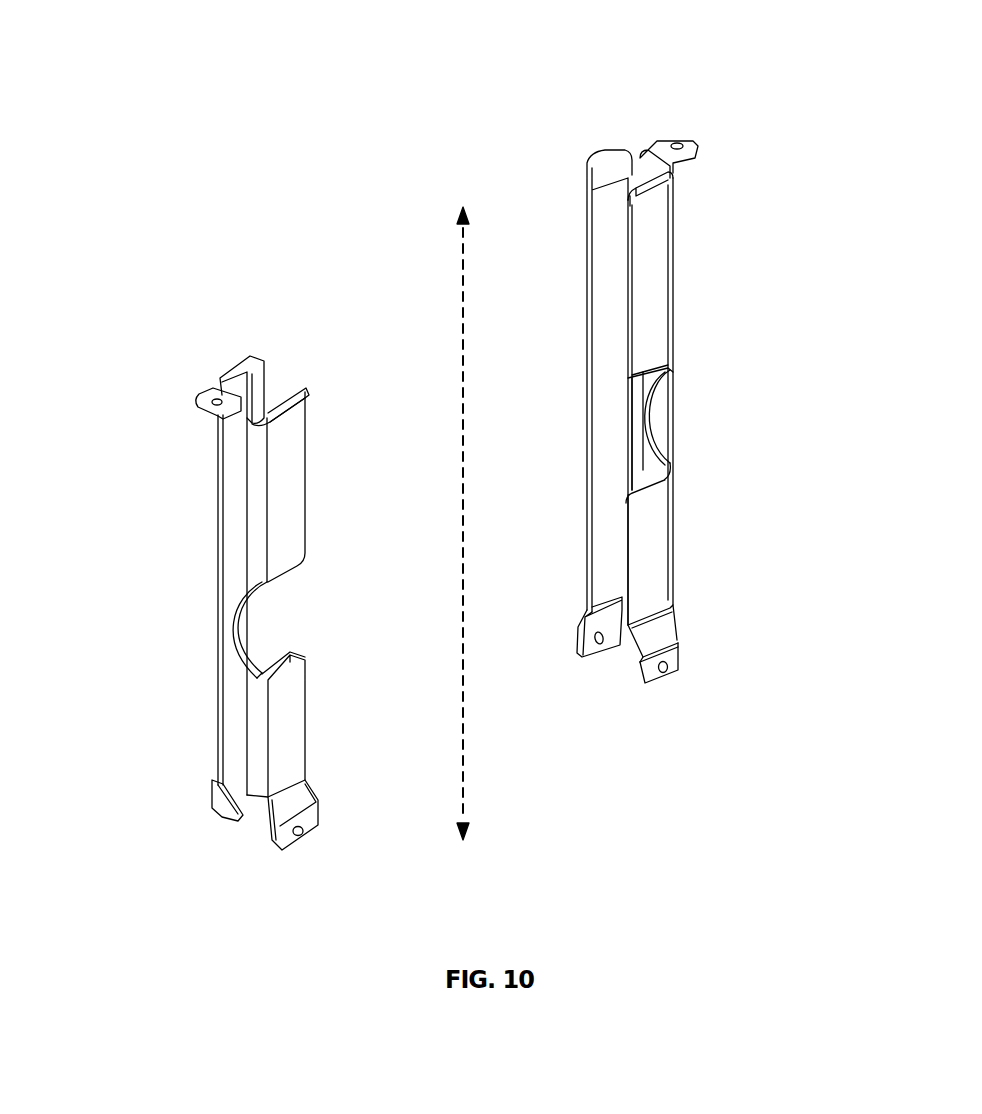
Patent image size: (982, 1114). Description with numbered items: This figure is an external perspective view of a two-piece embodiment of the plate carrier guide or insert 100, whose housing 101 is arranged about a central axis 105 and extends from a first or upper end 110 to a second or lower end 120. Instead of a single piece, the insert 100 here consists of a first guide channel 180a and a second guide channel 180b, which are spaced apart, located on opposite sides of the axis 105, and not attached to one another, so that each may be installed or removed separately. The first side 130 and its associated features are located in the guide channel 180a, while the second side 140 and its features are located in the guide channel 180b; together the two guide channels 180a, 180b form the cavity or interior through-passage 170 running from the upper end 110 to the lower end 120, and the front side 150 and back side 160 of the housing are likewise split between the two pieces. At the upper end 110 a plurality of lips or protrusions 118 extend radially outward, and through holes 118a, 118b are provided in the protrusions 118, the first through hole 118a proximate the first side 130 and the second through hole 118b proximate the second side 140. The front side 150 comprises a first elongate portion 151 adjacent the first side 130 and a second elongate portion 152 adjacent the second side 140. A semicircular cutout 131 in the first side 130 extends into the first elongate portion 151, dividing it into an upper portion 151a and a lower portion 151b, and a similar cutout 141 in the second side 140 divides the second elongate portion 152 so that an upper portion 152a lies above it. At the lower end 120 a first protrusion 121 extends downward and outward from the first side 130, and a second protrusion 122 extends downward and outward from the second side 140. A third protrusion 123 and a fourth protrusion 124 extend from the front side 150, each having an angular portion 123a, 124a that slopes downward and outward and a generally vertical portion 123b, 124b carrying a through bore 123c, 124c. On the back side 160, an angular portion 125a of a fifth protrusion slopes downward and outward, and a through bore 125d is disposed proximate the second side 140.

The insert 100 is at (248, 226).
The housing 101 is at (742, 58).
The central axis 105 is at (470, 235).
The upper end 110 is at (230, 346).
The protrusion 118 is at (206, 397).
The first through hole 118a is at (199, 408).
The second through hole 118b is at (688, 146).
The lower end 120 is at (250, 884).
The first protrusion 121 is at (230, 808).
The second protrusion 122 is at (682, 620).
The third protrusion 123 is at (264, 843).
The angular portion 123a is at (300, 790).
The vertical portion 123b is at (320, 816).
The through bore 123c is at (303, 835).
The fourth protrusion 124 is at (692, 670).
The angular portion 124a is at (665, 634).
The vertical portion 124b is at (655, 670).
The through bore 124c is at (665, 673).
The angular portion 125a is at (590, 616).
The through bore 125d is at (578, 637).
The first side 130 is at (240, 543).
The cutout 131 is at (252, 626).
The second side 140 is at (680, 530).
The cutout 141 is at (682, 406).
The front side 150 is at (655, 545).
The first elongate portion 151 is at (262, 560).
The upper portion 151a is at (297, 450).
The lower portion 151b is at (300, 722).
The second elongate portion 152 is at (690, 333).
The upper portion 152a is at (667, 326).
The back side 160 is at (216, 742).
The through-passage 170 is at (300, 612).
The first guide channel 180a is at (228, 470).
The second guide channel 180b is at (655, 240).